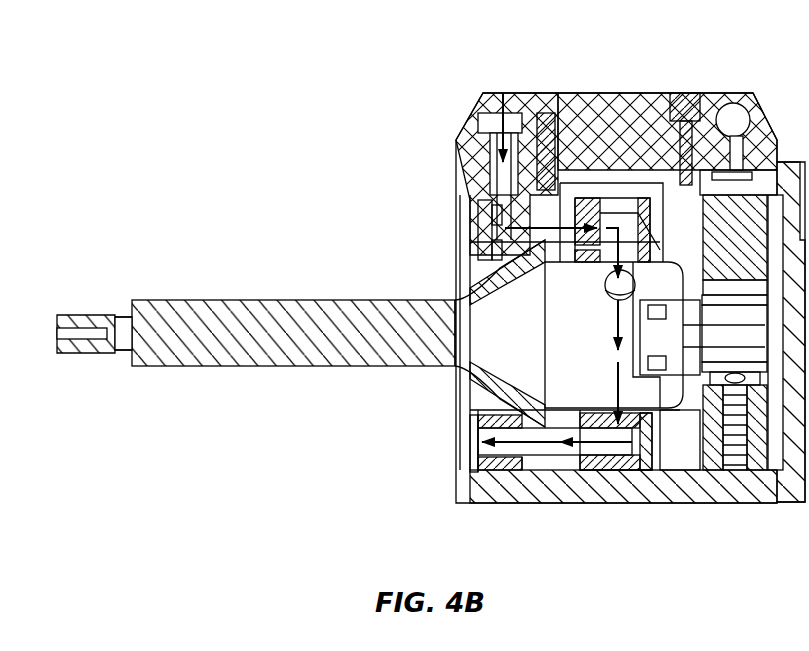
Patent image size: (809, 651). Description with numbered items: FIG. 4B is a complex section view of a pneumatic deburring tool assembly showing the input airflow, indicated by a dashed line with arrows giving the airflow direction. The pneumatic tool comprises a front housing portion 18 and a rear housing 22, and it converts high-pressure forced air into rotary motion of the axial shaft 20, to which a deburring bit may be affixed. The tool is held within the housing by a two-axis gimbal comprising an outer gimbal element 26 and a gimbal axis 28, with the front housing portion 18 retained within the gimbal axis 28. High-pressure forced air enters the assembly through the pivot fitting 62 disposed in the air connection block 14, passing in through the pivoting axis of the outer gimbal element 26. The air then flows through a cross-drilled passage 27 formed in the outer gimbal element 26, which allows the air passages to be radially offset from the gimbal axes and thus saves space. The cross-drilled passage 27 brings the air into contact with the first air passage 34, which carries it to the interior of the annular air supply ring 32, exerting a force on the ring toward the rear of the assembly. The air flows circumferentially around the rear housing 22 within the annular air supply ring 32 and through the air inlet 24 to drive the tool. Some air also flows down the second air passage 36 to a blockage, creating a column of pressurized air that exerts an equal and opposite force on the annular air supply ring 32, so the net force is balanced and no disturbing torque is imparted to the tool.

The air connection block 14 is at (466, 130).
The front housing portion 18 is at (282, 360).
The axial shaft 20 is at (92, 353).
The rear housing 22 is at (507, 307).
The air inlet 24 is at (624, 278).
The outer gimbal element 26 is at (473, 467).
The cross-drilled passage 27 is at (490, 243).
The gimbal axis 28 is at (493, 397).
The annular air supply ring 32 is at (600, 200).
The first air passage 34 is at (537, 222).
The second air passage 36 is at (544, 460).
The pivot fitting 62 is at (493, 182).